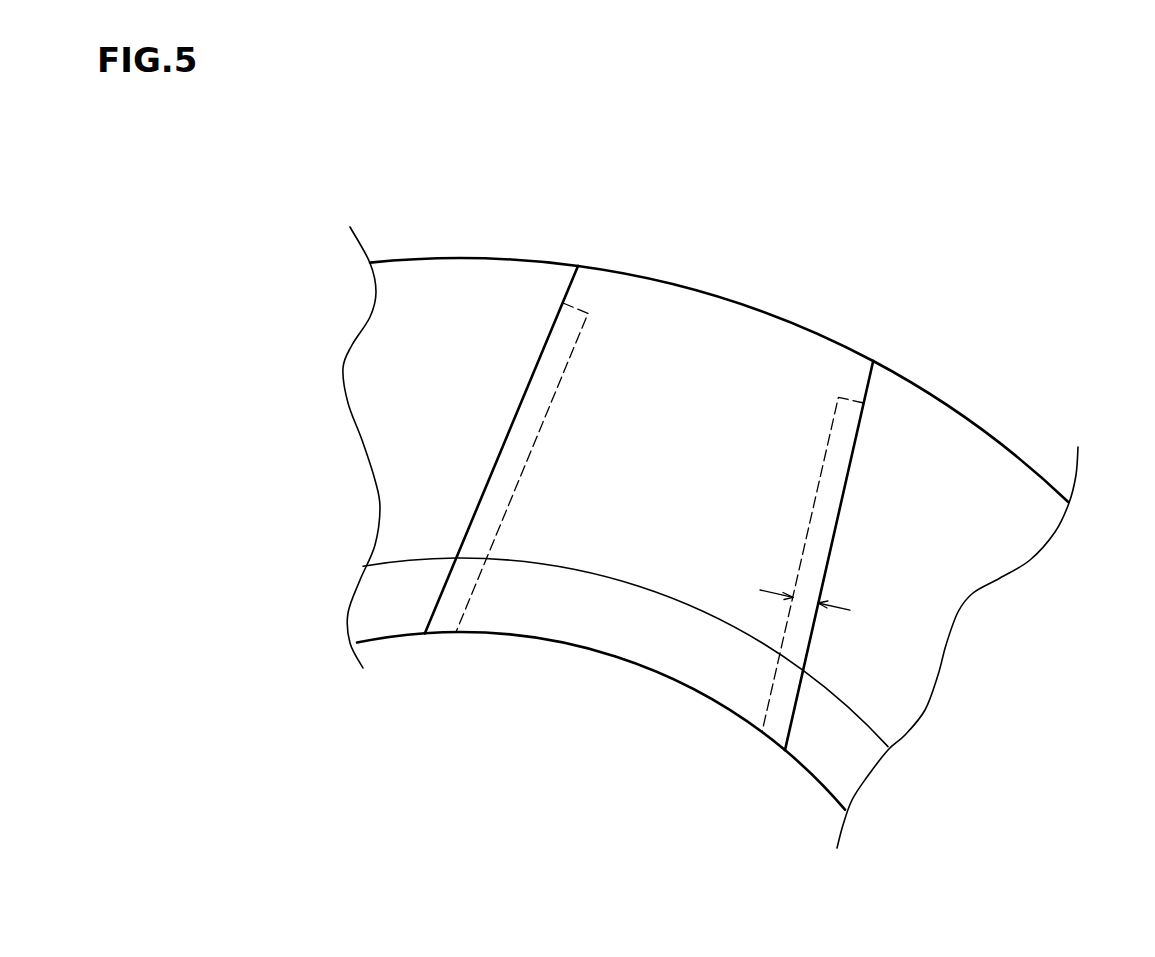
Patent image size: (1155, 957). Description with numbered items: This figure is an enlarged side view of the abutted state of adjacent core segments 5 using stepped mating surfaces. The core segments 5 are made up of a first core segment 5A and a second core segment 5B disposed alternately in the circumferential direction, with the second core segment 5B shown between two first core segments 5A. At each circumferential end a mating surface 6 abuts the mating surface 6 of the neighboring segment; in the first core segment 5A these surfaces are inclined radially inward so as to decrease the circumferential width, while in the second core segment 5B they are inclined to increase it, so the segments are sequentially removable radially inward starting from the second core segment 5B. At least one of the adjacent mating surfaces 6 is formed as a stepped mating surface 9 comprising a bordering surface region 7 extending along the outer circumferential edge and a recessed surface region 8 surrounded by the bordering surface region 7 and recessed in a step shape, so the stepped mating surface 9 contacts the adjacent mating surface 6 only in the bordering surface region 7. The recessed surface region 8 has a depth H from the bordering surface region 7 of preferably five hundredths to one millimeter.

The core segment 5 is at (710, 541).
The first core segment 5A is at (398, 618).
The second core segment 5B is at (602, 620).
The mating surface 6 is at (713, 444).
The bordering surface region 7 is at (569, 288).
The recessed surface region 8 is at (558, 370).
The stepped mating surface 9 is at (777, 444).
The depth H is at (805, 598).